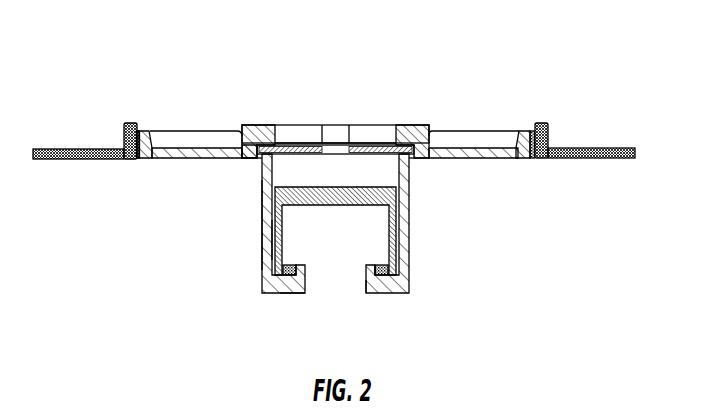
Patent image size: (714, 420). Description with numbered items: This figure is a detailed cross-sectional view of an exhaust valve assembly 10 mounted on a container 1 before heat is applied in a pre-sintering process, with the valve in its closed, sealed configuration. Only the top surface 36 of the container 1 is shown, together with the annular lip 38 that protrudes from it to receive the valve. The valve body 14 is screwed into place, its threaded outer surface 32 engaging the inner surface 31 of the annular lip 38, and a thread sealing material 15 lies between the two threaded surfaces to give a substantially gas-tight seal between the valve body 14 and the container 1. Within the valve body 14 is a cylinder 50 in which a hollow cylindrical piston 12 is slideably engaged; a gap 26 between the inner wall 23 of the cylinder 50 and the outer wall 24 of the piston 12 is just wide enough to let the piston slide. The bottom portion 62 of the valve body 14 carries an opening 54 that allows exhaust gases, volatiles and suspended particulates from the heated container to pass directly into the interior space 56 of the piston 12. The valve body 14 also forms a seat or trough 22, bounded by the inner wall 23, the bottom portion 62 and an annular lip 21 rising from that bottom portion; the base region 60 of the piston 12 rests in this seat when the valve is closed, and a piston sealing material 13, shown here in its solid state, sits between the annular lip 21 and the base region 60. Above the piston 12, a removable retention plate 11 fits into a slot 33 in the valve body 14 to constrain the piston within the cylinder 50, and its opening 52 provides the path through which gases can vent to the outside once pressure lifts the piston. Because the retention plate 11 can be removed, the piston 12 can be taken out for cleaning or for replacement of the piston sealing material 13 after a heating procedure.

The container 1 is at (583, 141).
The exhaust valve assembly 10 is at (493, 45).
The retention plate 11 is at (373, 147).
The piston 12 is at (365, 195).
The piston sealing material 13 is at (380, 278).
The valve body 14 is at (410, 122).
The thread sealing material 15 is at (533, 131).
The annular lip 21 is at (293, 291).
The seat or trough 22 is at (283, 274).
The inner wall 23 is at (268, 217).
The outer wall 24 is at (272, 240).
The gap 26 is at (263, 258).
The inner surface 31 is at (121, 159).
The threaded outer surface 32 is at (148, 135).
The slot 33 is at (244, 124).
The top surface 36 is at (77, 148).
The annular lip 38 is at (541, 123).
The cylinder 50 is at (377, 172).
The opening 52 is at (327, 147).
The opening 54 is at (334, 294).
The interior space 56 is at (360, 232).
The base region 60 is at (397, 273).
The bottom portion 62 is at (375, 293).